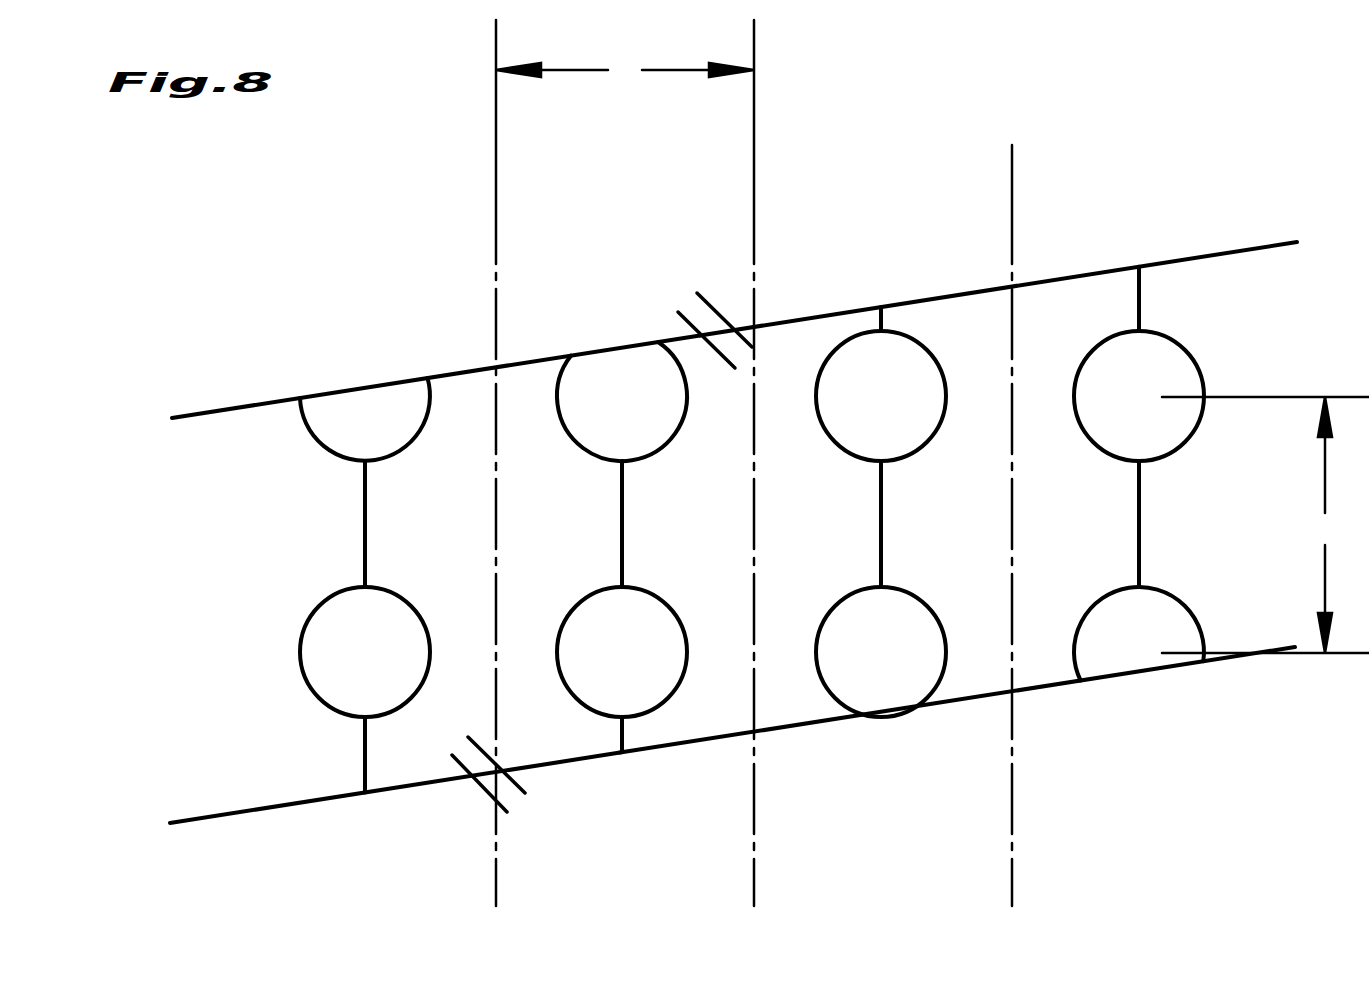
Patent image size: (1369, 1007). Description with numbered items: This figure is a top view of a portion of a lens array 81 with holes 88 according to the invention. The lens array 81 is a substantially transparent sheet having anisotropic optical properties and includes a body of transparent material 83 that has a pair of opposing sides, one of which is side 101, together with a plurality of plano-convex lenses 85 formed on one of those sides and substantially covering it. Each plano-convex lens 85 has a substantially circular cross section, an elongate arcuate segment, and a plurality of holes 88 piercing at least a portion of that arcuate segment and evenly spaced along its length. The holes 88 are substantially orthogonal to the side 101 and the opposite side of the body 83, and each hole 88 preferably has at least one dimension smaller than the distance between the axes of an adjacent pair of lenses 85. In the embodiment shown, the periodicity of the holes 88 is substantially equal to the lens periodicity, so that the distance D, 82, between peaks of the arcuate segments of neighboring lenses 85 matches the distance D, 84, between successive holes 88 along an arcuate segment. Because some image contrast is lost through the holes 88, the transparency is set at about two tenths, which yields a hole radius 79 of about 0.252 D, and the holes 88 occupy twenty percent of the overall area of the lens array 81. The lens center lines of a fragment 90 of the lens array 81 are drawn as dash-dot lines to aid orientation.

The hole radius 79 is at (278, 588).
The lens array 81 is at (392, 837).
The distance D between peaks of arcuate segments 82 is at (625, 96).
The body of transparent material 83 is at (267, 433).
The distance D between holes 84 is at (1302, 523).
The plano-convex lenses 85 is at (696, 792).
The holes 88 is at (622, 652).
The fragment of the lens array 90 is at (497, 298).
The side of the body of transparent material 101 is at (1231, 200).